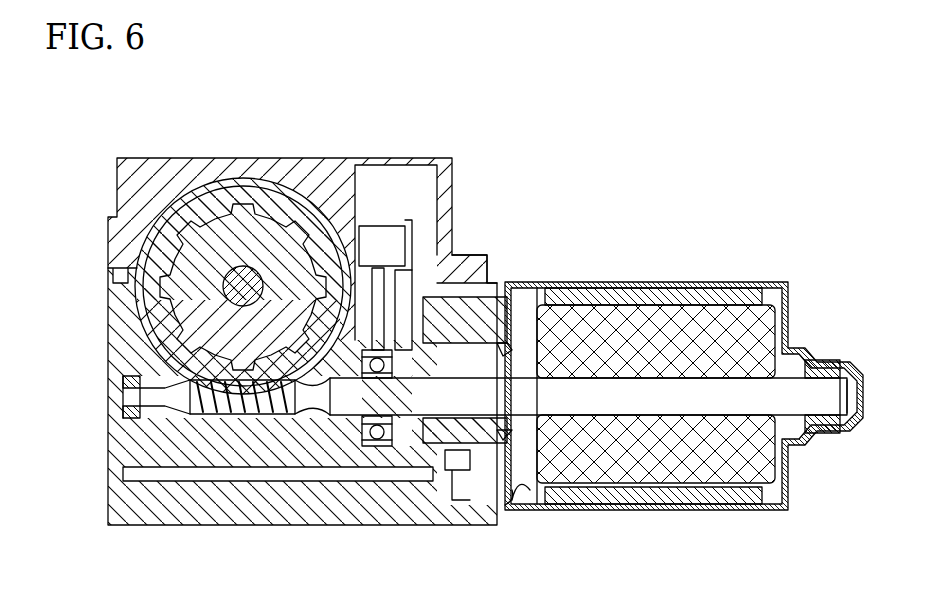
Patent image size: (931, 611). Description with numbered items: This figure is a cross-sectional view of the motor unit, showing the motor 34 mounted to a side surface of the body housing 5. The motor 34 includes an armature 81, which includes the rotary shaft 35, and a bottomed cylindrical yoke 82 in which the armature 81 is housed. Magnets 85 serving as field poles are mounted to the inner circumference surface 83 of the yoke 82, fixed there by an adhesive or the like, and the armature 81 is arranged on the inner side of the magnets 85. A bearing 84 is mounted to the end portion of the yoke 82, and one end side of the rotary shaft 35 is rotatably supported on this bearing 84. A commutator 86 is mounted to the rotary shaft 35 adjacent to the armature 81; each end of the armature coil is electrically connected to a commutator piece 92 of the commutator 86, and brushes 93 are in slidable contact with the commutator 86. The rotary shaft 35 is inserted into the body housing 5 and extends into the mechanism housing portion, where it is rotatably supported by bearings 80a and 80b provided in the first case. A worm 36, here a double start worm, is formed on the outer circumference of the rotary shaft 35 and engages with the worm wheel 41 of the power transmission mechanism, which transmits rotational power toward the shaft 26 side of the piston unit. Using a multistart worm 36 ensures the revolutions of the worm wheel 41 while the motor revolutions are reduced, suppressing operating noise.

The body housing 5 is at (320, 158).
The shaft 26 is at (232, 275).
The worm 36 is at (198, 407).
The worm wheel 41 is at (240, 392).
The bearing 80a is at (148, 406).
The bearing 80b is at (384, 448).
The brushes 93 is at (472, 297).
The commutator 86 is at (508, 343).
The motor 34 is at (780, 283).
The yoke 82 is at (576, 288).
The magnets 85 is at (661, 504).
The armature 81 is at (655, 315).
The bearing 84 is at (828, 360).
The rotary shaft 35 is at (822, 425).
The commutator piece 92 is at (463, 500).
The inner circumference surface 83 is at (522, 500).